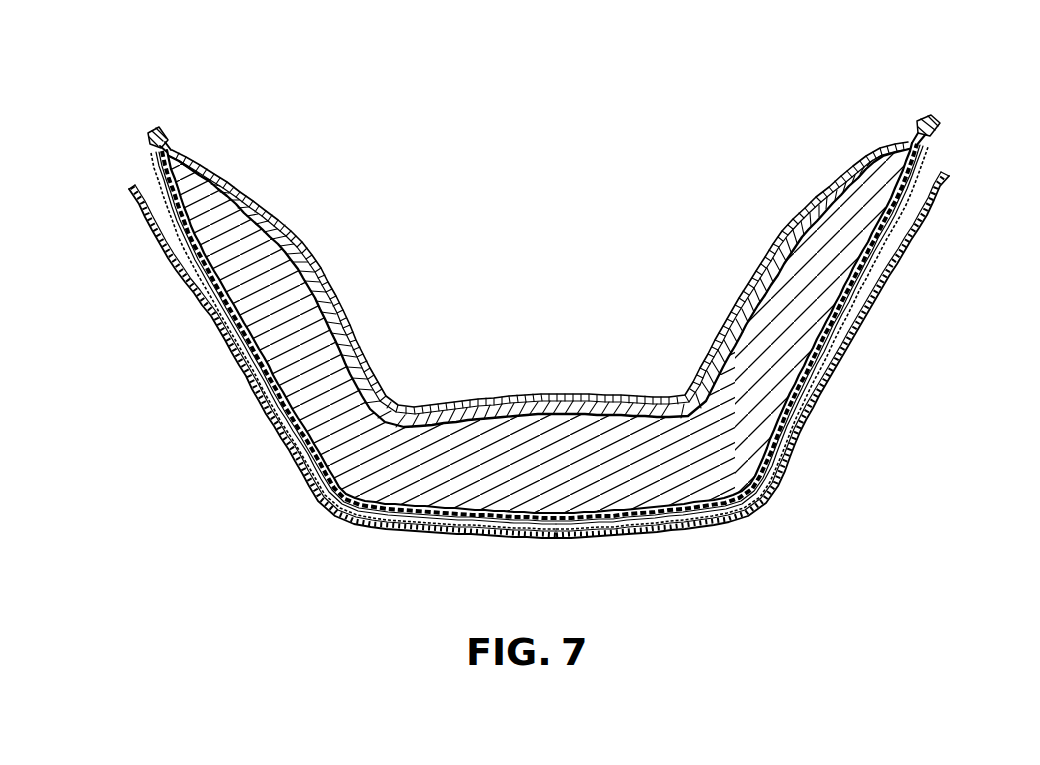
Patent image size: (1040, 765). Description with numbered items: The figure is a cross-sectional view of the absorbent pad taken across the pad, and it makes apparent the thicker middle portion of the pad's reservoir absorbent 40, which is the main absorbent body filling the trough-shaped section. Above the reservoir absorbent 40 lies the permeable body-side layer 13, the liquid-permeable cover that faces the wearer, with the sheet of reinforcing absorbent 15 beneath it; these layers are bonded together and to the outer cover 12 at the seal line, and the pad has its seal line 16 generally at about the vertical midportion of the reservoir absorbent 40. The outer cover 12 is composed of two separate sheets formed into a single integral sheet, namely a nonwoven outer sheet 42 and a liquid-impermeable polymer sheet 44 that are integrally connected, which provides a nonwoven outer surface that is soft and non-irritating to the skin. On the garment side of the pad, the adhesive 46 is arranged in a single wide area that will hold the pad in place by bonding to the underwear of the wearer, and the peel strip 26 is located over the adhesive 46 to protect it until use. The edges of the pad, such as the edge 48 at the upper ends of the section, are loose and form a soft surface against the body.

The outer cover 12 is at (163, 177).
The permeable body-side layer 13 is at (306, 245).
The sheet of reinforcing absorbent 15 is at (365, 367).
The seal line 16 is at (912, 138).
The peel strip 26 is at (150, 213).
The reservoir absorbent 40 is at (812, 262).
The nonwoven outer sheet 42 is at (918, 180).
The liquid-impermeable polymer sheet 44 is at (918, 160).
The adhesive 46 is at (384, 523).
The edge 48 is at (165, 137).